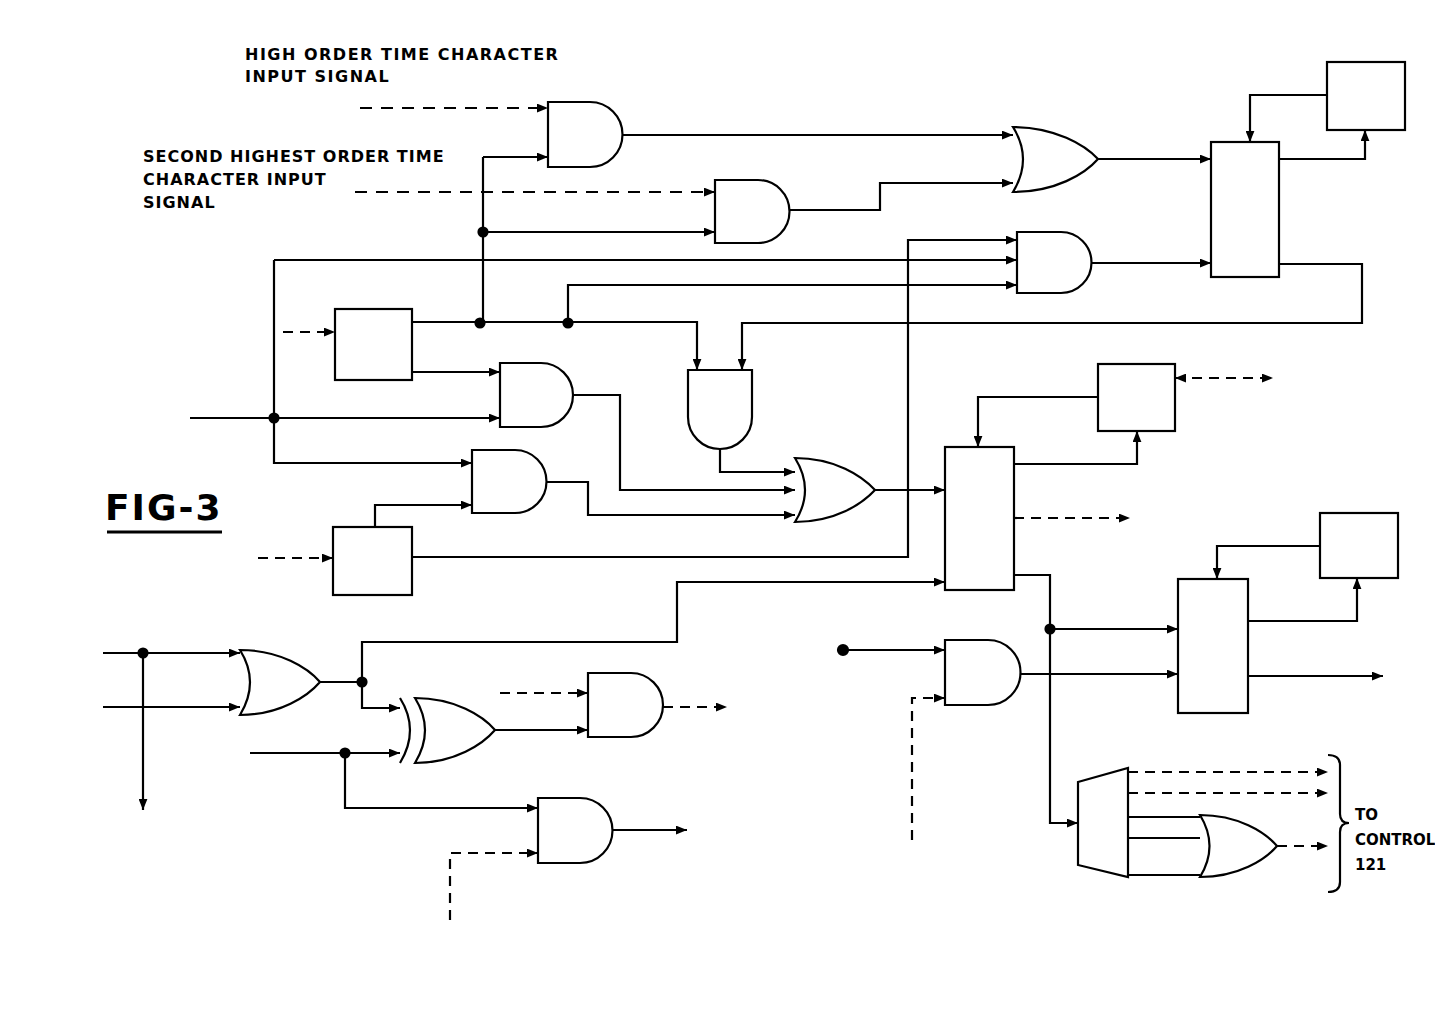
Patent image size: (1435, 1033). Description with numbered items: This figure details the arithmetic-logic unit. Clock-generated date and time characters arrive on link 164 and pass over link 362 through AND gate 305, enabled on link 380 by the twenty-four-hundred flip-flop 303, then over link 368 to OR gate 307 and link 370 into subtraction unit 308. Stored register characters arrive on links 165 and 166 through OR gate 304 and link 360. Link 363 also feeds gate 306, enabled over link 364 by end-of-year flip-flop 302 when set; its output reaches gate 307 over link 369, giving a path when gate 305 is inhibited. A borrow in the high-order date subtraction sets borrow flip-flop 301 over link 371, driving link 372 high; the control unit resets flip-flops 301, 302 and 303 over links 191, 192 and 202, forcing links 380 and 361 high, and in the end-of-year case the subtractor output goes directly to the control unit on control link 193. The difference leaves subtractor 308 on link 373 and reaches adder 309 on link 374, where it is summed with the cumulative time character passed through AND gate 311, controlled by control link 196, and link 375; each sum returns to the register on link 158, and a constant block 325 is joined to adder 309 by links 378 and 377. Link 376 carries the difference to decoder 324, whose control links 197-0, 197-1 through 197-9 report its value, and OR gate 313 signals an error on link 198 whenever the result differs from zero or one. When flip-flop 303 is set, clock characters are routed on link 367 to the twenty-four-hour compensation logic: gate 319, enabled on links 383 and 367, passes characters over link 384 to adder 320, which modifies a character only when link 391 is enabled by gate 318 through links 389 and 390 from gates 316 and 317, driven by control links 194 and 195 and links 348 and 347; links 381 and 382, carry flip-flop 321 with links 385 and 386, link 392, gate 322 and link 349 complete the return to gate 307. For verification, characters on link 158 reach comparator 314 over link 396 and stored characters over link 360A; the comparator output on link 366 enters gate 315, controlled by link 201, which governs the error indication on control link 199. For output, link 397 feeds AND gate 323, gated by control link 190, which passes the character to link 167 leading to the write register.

The control link 194 is at (420, 112).
The control link 195 is at (418, 196).
The gate 316 is at (585, 134).
The gate 317 is at (752, 211).
The gate 318 is at (1055, 159).
The gate 319 is at (1054, 262).
The adder 320 is at (1245, 209).
The carry flip-flop 321 is at (1366, 96).
The link 348 is at (484, 162).
The link 347 is at (548, 236).
The link 382 is at (490, 288).
The link 389 is at (738, 134).
The link 390 is at (804, 214).
The link 391 is at (1134, 162).
The link 386 is at (1271, 99).
The link 385 is at (1288, 162).
The link 384 is at (1118, 266).
The link 392 is at (1288, 266).
The link 361 is at (918, 244).
The link 367 is at (926, 268).
The link 383 is at (924, 292).
The link 381 is at (588, 327).
The link 202 is at (280, 332).
The 2400 flip-flop 303 is at (373, 344).
The link 380 is at (438, 380).
The AND gate 305 is at (536, 395).
The link 164 is at (206, 418).
The link 362 is at (330, 422).
The signal line 363 is at (330, 467).
The gate 306 is at (509, 481).
The link 364 is at (374, 509).
The link 192 is at (267, 551).
The end of year flip-flop 302 is at (394, 561).
The gate 322 is at (720, 409).
The link 349 is at (735, 476).
The link 368 is at (588, 400).
The signal line 369 is at (656, 520).
The OR gate 307 is at (835, 490).
The link 370 is at (883, 502).
The subtraction unit 308 is at (979, 518).
The link 372 is at (1008, 402).
The borrow flip-flop 301 is at (1136, 397).
The link 191 is at (1195, 382).
The link 371 is at (1040, 468).
The control link 193 is at (1048, 520).
The link 373 is at (1028, 579).
The link 374 is at (1074, 632).
The link 375 is at (1074, 679).
The link 376 is at (1052, 712).
The adder 309 is at (1213, 646).
The K2 constant register 325 is at (1359, 545).
The signal line 378 is at (1236, 551).
The signal line 377 is at (1278, 622).
The link 158 is at (1279, 681).
The AND gate 311 is at (983, 672).
The link 165 is at (880, 646).
The link 166 is at (164, 710).
The control link 196 is at (915, 790).
The decoder 324 is at (1088, 886).
The control link 197-0 is at (1201, 772).
The control link 197-1 is at (1206, 790).
The control link 197-9 is at (1172, 878).
The OR gate 313 is at (1238, 846).
The control link 198 is at (1280, 850).
The OR gate 304 is at (280, 682).
The link 360 is at (490, 642).
The link 360A is at (357, 698).
The link 396 is at (359, 758).
The link 397 is at (434, 812).
The comparator 314 is at (447, 730).
The signal line 366 is at (507, 734).
The control link 201 is at (510, 698).
The gate 315 is at (625, 705).
The control link 199 is at (674, 712).
The AND gate 323 is at (575, 830).
The link 167 is at (620, 834).
The control link 190 is at (442, 866).